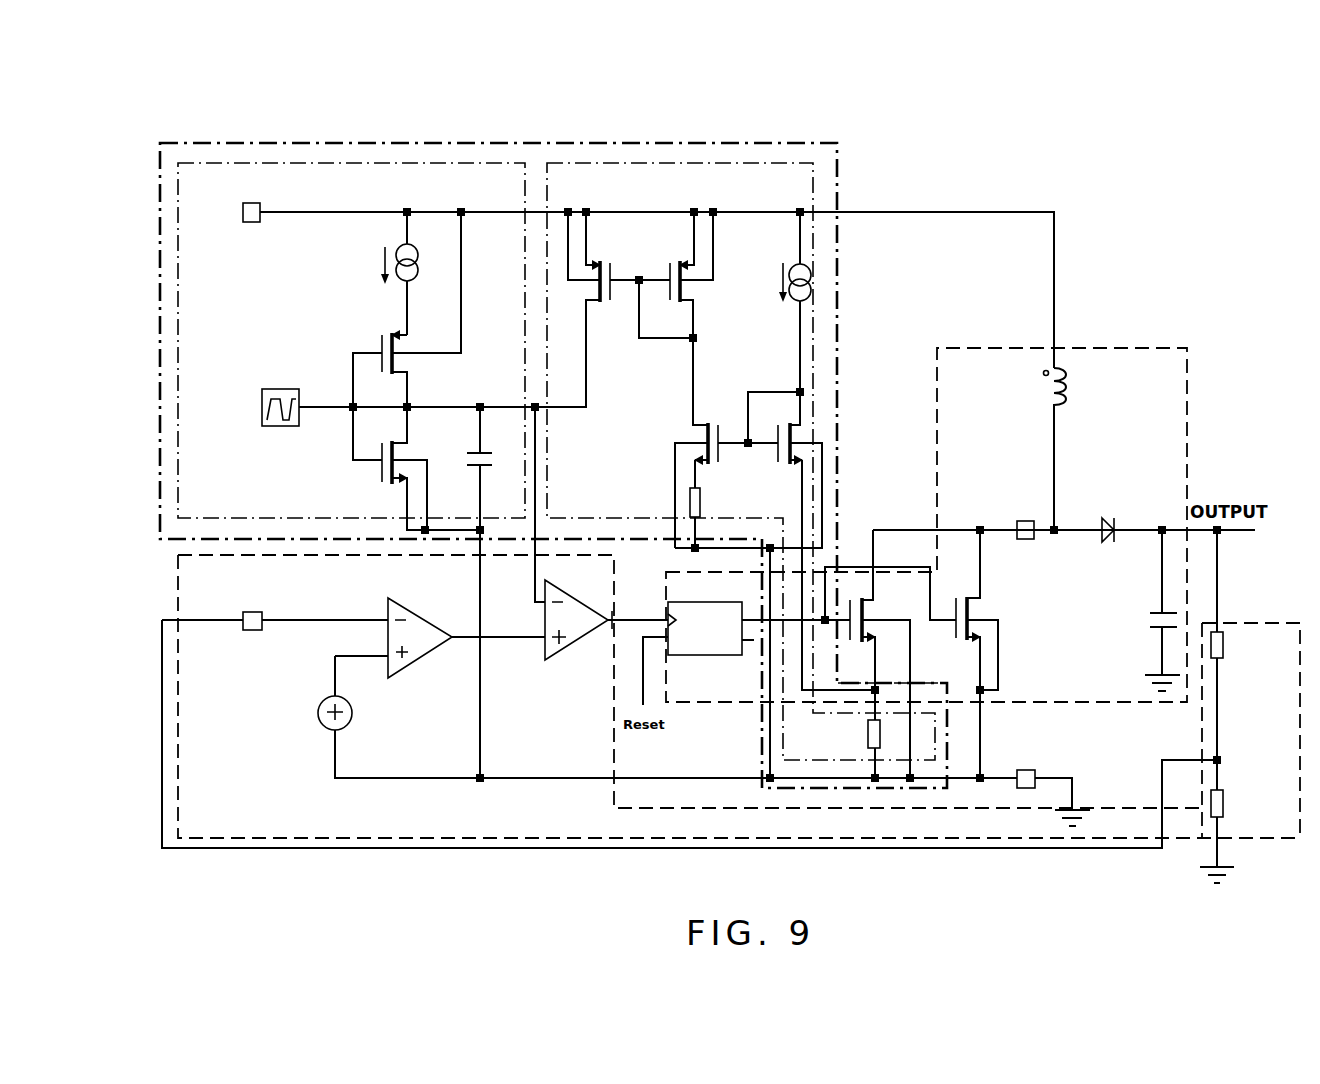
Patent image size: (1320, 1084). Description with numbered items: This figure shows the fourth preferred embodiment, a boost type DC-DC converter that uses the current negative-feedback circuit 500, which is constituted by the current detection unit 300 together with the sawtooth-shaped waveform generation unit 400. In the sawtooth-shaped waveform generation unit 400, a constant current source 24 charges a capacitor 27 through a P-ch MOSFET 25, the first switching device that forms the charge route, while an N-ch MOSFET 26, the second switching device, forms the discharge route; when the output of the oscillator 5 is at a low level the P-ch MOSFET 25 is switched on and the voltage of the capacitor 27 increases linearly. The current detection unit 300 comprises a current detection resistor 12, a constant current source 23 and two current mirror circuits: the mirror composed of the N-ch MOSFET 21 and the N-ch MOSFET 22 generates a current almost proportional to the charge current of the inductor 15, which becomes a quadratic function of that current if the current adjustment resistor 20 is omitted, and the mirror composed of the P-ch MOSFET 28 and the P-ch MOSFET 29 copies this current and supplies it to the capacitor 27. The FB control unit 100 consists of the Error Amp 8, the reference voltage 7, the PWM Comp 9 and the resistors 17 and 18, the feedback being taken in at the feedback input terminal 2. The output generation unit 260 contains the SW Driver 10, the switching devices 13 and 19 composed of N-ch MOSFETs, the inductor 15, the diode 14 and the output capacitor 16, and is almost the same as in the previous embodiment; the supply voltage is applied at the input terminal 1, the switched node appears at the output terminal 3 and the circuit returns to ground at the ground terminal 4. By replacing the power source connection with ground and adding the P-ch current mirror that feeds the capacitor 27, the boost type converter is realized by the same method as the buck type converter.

The VIN input terminal 1 is at (243, 213).
The FB-IN feedback input terminal 2 is at (243, 617).
The OUT output terminal 3 is at (1025, 540).
The GND ground terminal 4 is at (1037, 772).
The oscillator 5 is at (262, 409).
The reference voltage VREF1 7 is at (322, 727).
The Error Amp 8 is at (419, 660).
The PWM Comp 9 is at (565, 651).
The SW Driver 10 is at (718, 655).
The current detection resistor 12 is at (868, 738).
The switching device Q1 13 is at (975, 613).
The diode D1 14 is at (1107, 518).
The inductor L1 15 is at (1072, 395).
The output capacitor Cout 16 is at (1146, 624).
The resistor R3 17 is at (1223, 653).
The resistor R2 18 is at (1223, 806).
The switching device Q6 19 is at (866, 608).
The current adjustment resistor R4 20 is at (700, 498).
The N-ch MOSFET Q2 21 is at (778, 452).
The N-ch MOSFET Q3 22 is at (698, 436).
The constant current source I1 23 is at (787, 265).
The constant current source I2 24 is at (380, 267).
The P-ch MOSFET Q5 25 is at (380, 346).
The N-ch MOSFET Q4 26 is at (383, 483).
The capacitor C1 27 is at (490, 470).
The P-ch MOSFET Q7 28 is at (686, 290).
The P-ch MOSFET Q8 29 is at (592, 288).
The FB control unit 100 is at (928, 838).
The output generation unit 260 is at (1128, 348).
The current detection unit 300 is at (686, 163).
The sawtooth-shaped waveform generation unit 400 is at (316, 163).
The current negative-feedback circuit 500 is at (490, 143).